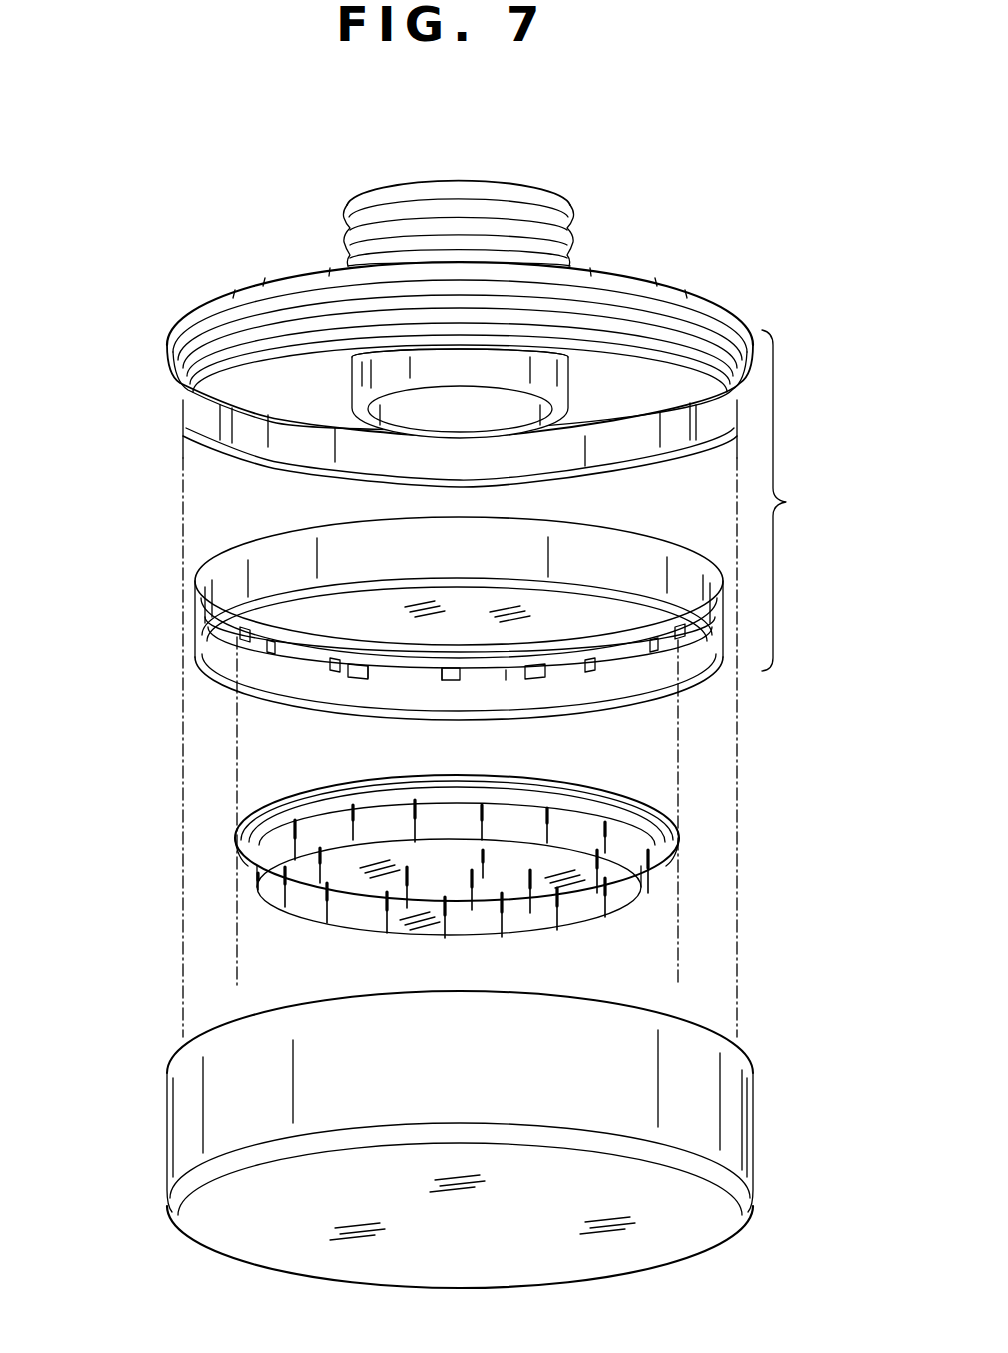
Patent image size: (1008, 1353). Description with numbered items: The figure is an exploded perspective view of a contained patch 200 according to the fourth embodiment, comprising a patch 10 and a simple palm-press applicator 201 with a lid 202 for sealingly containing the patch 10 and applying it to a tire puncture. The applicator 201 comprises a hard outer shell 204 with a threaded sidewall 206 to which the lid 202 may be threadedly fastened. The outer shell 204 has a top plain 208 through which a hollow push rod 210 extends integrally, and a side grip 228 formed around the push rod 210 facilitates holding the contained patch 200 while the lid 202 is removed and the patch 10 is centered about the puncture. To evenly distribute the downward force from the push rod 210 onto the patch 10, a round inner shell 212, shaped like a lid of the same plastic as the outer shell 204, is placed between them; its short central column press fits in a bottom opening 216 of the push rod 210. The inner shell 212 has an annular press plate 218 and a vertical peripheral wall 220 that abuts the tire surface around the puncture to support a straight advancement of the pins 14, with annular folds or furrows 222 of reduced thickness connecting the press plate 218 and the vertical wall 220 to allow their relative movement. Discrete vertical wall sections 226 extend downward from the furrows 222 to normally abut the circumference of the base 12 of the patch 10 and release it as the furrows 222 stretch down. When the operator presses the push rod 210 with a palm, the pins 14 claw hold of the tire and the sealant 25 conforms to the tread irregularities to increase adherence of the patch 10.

The contained patch 200 is at (163, 160).
The palm-press applicator 201 is at (809, 500).
The lid 202 is at (755, 1138).
The hard outer shell 204 is at (240, 287).
The threaded sidewall 206 is at (181, 394).
The top plain 208 is at (646, 284).
The hollow push rod 210 is at (558, 188).
The round inner shell 212 is at (210, 548).
The bottom opening 216 is at (548, 412).
The annular press plate 218 is at (443, 642).
The vertical peripheral wall 220 is at (198, 622).
The annular folds or furrows 222 is at (347, 660).
The discrete vertical wall sections 226 is at (393, 675).
The side grip 228 is at (345, 215).
The patch 10 is at (633, 793).
The base 12 is at (283, 797).
The pins 14 is at (262, 868).
The sealant 25 is at (627, 910).